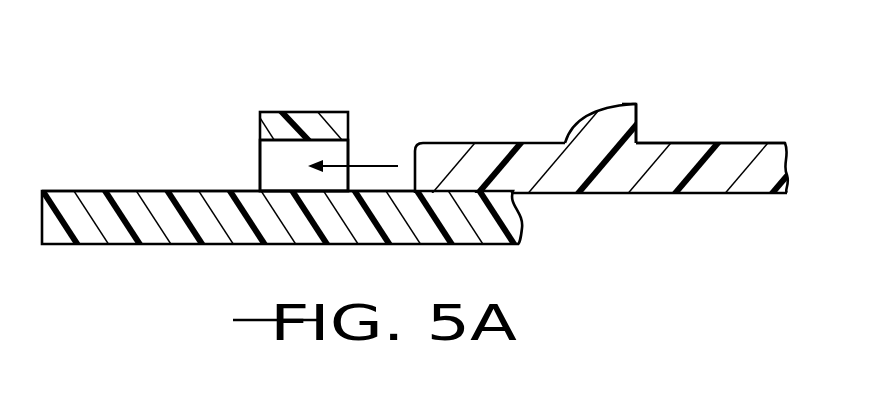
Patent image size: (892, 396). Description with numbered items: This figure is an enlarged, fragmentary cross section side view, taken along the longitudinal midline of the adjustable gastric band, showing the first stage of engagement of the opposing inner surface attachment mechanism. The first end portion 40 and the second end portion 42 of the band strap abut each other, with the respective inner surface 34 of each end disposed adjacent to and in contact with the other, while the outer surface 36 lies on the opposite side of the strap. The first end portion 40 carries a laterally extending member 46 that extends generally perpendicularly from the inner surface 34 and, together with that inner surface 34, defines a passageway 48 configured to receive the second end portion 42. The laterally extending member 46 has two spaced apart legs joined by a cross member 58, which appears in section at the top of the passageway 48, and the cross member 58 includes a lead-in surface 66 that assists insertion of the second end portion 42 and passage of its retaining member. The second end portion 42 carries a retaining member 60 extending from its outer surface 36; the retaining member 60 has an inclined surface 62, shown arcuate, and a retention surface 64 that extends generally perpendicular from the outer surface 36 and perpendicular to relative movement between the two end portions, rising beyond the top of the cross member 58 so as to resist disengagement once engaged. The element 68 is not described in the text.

The inner surface 34 is at (180, 190).
The outer surface 36 is at (692, 142).
The first end portion 40 is at (247, 245).
The second end portion 42 is at (487, 141).
The laterally extending member 46 is at (292, 112).
The passageway 48 is at (273, 163).
The cross member 58 is at (333, 115).
The retaining member 60 is at (608, 120).
The inclined surface 62 is at (633, 104).
The retention surface 64 is at (640, 110).
The lead-in surface 66 is at (349, 140).
The edge region of layer 68 is at (349, 120).